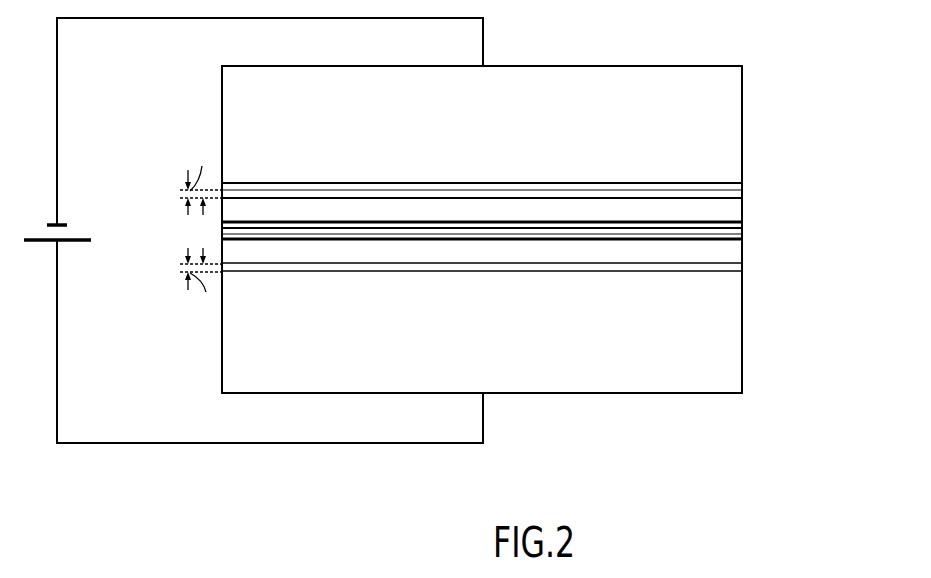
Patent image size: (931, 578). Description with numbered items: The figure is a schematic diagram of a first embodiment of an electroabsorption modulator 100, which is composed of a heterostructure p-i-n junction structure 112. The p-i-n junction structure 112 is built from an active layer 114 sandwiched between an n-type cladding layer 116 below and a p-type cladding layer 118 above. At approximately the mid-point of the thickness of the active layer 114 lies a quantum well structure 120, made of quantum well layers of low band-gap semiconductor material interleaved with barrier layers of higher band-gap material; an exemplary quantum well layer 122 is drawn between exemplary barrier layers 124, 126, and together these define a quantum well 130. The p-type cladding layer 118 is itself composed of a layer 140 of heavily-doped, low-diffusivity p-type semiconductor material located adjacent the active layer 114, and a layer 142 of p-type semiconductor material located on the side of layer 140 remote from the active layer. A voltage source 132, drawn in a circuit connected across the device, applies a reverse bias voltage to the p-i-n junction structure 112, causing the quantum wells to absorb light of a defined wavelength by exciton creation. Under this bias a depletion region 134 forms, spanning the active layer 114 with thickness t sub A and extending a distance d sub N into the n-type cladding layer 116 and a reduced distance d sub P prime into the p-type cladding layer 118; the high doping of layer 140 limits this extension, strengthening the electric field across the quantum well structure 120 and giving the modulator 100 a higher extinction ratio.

The electroabsorption modulator 100 is at (733, 56).
The p-i-n junction structure 112 is at (835, 66).
The active layer 114 is at (790, 200).
The n-type cladding layer 116 is at (790, 260).
The p-type cladding layer 118 is at (790, 66).
The quantum well structure 120 is at (750, 217).
The quantum well layer 122 is at (305, 233).
The barrier layer 124 is at (340, 240).
The barrier layer 126 is at (275, 226).
The quantum well 130 is at (306, 214).
The voltage source 132 is at (63, 243).
The depletion region 134 is at (178, 192).
The layer of low-diffusivity p-type semiconductor material 140 is at (750, 196).
The layer of p-type semiconductor material 142 is at (750, 66).